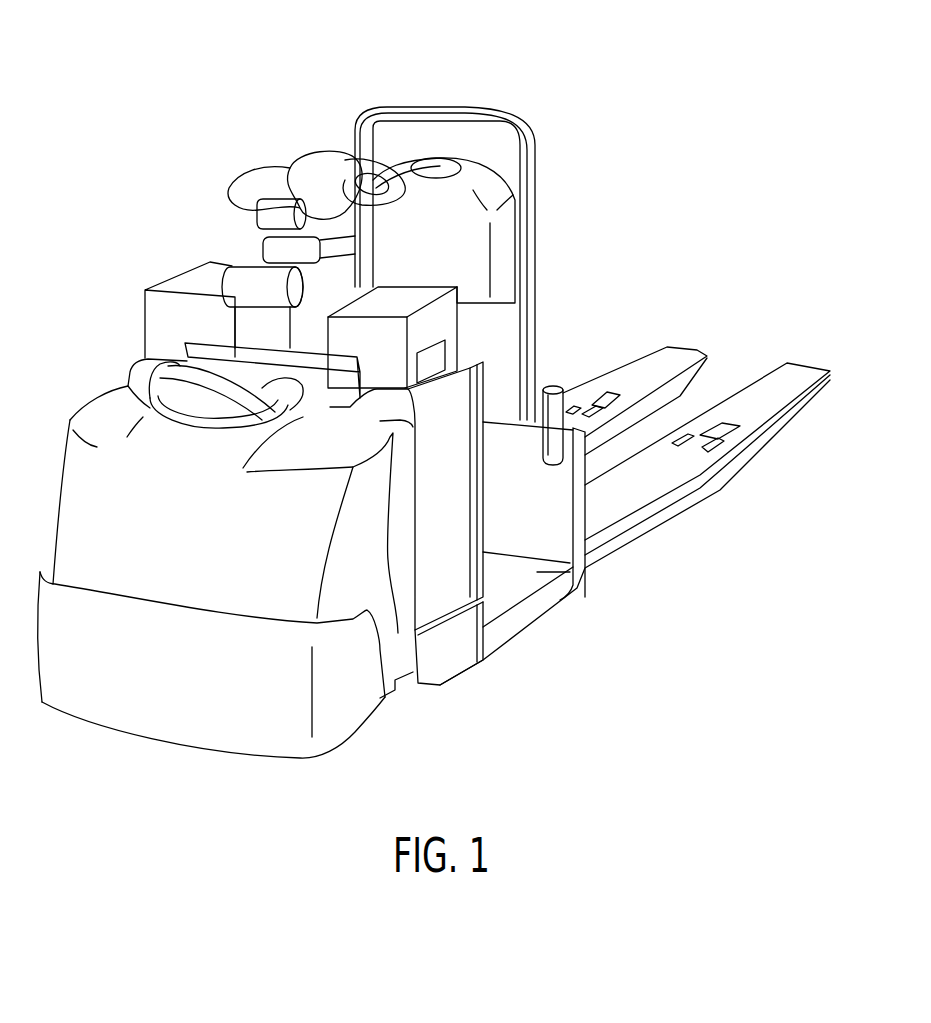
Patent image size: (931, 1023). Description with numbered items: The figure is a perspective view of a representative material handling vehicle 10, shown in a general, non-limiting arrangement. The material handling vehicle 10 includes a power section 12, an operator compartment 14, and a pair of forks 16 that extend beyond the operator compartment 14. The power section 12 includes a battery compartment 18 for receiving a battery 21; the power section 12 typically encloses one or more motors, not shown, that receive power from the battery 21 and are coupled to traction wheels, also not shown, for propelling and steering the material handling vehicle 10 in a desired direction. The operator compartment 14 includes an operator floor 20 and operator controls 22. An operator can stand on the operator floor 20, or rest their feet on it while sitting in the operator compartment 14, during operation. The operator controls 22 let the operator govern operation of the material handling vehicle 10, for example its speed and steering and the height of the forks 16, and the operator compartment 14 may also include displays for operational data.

The material handling vehicle 10 is at (434, 404).
The power section 12 is at (368, 747).
The operator compartment 14 is at (551, 652).
The forks 16 is at (810, 362).
The battery compartment 18 is at (444, 579).
The operator floor 20 is at (570, 572).
The battery 21 is at (447, 480).
The operator controls 22 is at (293, 128).